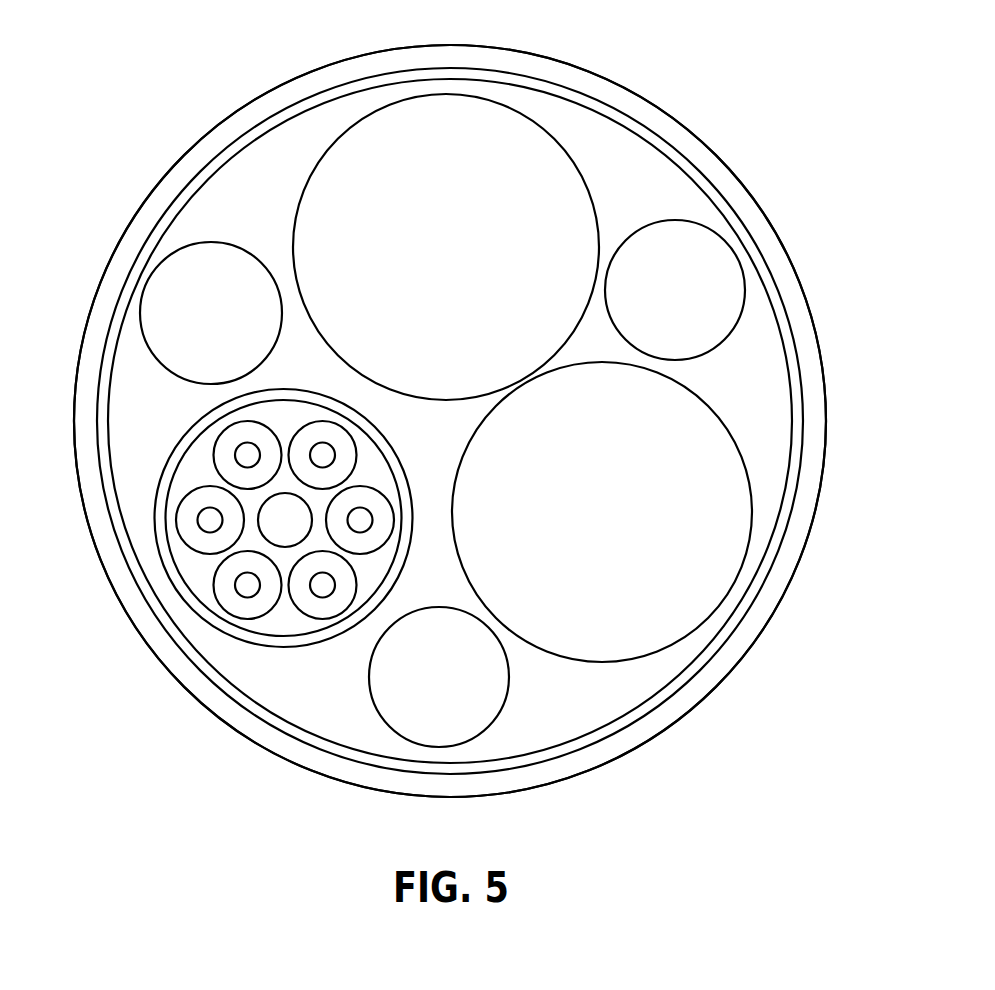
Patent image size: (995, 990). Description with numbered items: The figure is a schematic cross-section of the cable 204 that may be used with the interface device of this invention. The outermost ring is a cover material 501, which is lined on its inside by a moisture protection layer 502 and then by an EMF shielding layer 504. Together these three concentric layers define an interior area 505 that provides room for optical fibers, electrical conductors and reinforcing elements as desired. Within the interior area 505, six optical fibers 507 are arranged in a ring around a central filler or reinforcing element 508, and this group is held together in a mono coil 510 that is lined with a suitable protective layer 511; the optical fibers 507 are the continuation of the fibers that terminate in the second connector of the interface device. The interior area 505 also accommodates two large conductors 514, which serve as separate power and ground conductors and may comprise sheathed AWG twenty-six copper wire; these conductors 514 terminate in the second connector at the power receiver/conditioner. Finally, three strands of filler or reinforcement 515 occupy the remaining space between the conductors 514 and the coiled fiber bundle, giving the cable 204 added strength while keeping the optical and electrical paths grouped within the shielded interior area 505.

The cable 204 is at (718, 88).
The cover material 501 is at (230, 117).
The moisture protection layer 502 is at (185, 185).
The EMF shielding layer 504 is at (342, 95).
The interior area 505 is at (288, 208).
The optical fibers 507 is at (215, 450).
The filler or reinforcing element 508 is at (260, 532).
The mono coil 510 is at (220, 637).
The protective layer 511 is at (170, 560).
The conductors 514 is at (471, 258).
The strands of filler/reinforcement 515 is at (235, 324).